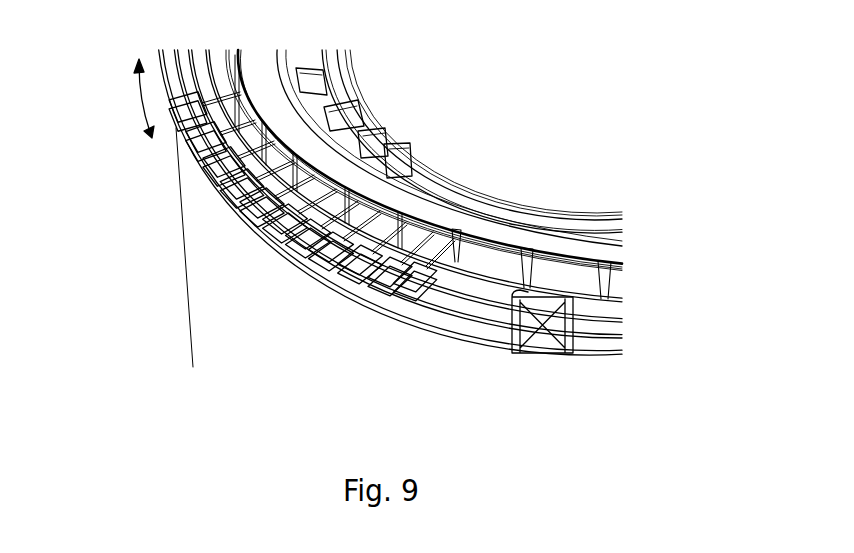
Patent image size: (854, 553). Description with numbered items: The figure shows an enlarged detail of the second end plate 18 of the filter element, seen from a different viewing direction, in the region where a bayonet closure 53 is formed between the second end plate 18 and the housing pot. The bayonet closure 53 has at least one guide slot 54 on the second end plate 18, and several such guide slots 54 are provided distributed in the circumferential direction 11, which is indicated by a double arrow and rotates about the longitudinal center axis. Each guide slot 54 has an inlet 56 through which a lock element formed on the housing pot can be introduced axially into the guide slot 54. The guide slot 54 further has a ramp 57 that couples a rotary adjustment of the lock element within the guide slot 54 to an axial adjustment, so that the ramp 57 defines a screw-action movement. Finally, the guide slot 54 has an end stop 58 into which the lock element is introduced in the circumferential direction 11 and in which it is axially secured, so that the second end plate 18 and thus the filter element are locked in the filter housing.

The circumferential direction 11 is at (142, 97).
The second end plate 18 is at (603, 215).
The bayonet closure 53 is at (389, 354).
The guide slot 54 is at (426, 308).
The inlet 56 is at (490, 298).
The ramp 57 is at (377, 298).
The end stop 58 is at (240, 213).